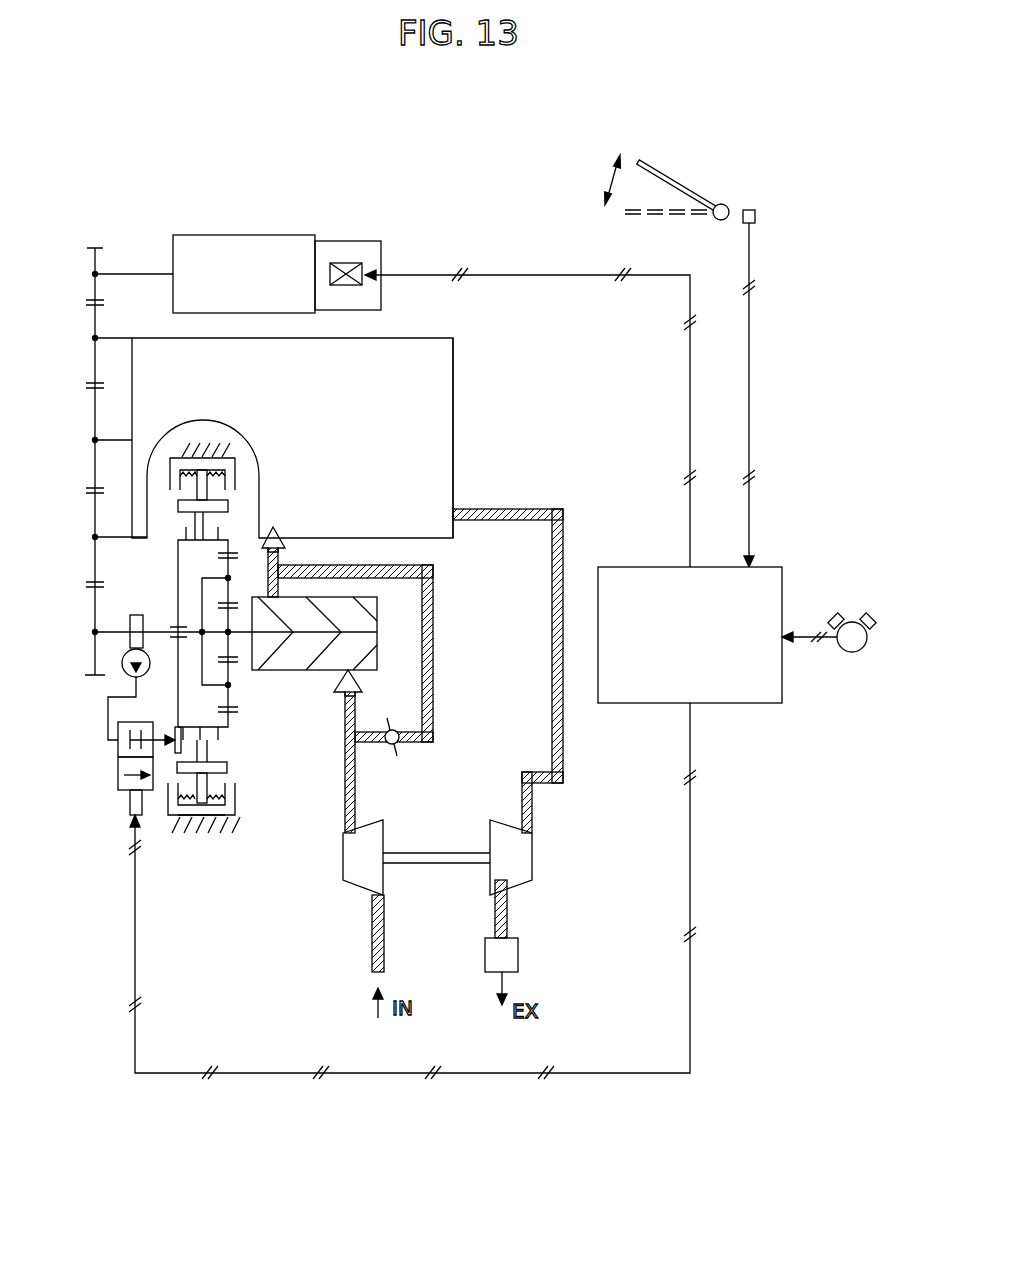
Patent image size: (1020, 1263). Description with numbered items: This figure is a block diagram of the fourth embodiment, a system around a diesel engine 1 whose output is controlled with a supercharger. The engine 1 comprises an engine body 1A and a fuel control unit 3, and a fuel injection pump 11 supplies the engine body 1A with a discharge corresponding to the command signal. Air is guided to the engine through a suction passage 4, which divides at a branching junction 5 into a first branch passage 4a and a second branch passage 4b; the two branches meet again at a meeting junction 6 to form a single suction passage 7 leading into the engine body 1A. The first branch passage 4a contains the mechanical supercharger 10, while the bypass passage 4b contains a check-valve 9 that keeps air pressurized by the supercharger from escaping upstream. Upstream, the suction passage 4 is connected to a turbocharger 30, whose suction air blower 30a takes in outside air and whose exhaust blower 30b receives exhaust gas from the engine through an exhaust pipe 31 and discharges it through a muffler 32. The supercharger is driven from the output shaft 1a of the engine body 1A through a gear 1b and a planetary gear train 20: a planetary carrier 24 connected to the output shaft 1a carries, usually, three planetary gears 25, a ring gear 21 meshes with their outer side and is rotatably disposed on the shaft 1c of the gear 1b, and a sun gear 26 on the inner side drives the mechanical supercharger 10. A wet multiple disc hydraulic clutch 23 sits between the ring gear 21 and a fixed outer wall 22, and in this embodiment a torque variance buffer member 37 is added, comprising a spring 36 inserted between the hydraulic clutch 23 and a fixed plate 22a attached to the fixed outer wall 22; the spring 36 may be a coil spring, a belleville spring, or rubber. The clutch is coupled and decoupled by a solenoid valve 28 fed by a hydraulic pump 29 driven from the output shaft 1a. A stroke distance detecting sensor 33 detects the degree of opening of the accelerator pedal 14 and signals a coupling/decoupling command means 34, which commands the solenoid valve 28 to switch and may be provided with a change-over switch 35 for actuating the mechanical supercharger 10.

The engine 1 is at (478, 393).
The engine body 1A is at (452, 455).
The output shaft 1a is at (112, 440).
The gear 1b is at (95, 605).
The shaft 1c is at (157, 632).
The fuel control unit 3 is at (265, 237).
The suction passage 4 is at (355, 785).
The first branch passage 4a is at (360, 686).
The second branch passage 4b is at (435, 640).
The branching junction 5 is at (345, 733).
The meeting junction 6 is at (280, 565).
The suction passage 7 is at (280, 540).
The check-valve 9 is at (398, 740).
The mechanical supercharger 10 is at (352, 622).
The fuel injection pump 11 is at (200, 248).
The accelerator pedal 14 is at (676, 177).
The planetary gear train 20 is at (172, 567).
The ring gear 21 is at (233, 715).
The fixed outer wall 22 is at (229, 845).
The fixed plate 22a is at (190, 832).
The hydraulic clutch 23 is at (213, 520).
The planetary carrier 24 is at (228, 645).
The planetary gears 25 is at (230, 695).
The sun gear 26 is at (205, 668).
The solenoid valve 28 is at (118, 778).
The hydraulic pump 29 is at (122, 664).
The turbocharger 30 is at (438, 896).
The suction air blower 30a is at (350, 862).
The exhaust blower 30b is at (520, 855).
The exhaust pipe 31 is at (563, 712).
The muffler 32 is at (518, 955).
The stroke distance detecting sensor 33 is at (756, 214).
The coupling/decoupling command means 34 is at (782, 692).
The change-over switch 35 is at (860, 645).
The spring 36 is at (213, 817).
The torque variance buffer member 37 is at (213, 783).